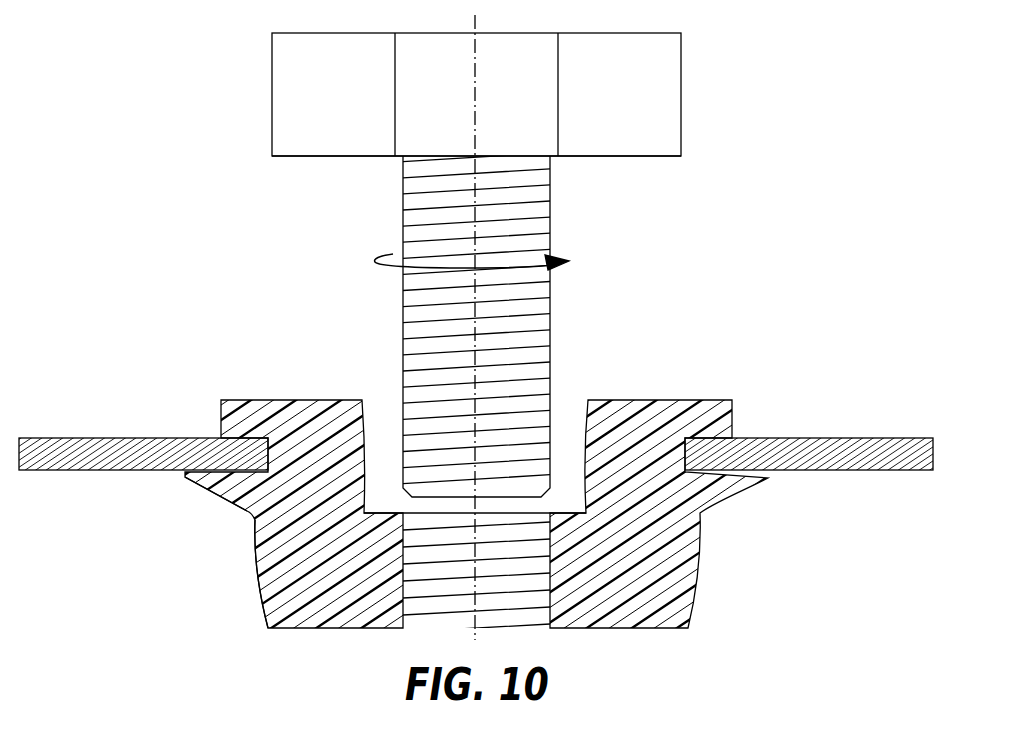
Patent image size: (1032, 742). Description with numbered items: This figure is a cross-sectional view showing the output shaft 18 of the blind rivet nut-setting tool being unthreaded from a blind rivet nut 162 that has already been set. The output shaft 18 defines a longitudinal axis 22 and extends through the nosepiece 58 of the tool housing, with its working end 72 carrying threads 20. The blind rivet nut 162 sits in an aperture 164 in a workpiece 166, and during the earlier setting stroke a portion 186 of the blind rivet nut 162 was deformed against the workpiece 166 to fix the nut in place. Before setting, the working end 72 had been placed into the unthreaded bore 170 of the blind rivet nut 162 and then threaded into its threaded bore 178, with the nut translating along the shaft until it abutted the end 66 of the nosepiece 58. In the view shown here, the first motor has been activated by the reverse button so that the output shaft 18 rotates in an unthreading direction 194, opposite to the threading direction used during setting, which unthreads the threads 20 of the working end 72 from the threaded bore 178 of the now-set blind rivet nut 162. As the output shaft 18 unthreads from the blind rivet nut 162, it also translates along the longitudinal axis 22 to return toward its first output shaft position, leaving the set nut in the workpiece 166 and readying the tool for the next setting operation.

The nosepiece 58 is at (292, 116).
The end of the nosepiece 66 is at (330, 157).
The longitudinal axis 22 is at (478, 102).
The output shaft 18 is at (590, 286).
The working end 72 is at (508, 193).
The threads 20 is at (590, 286).
The unthreading direction 194 is at (533, 273).
The aperture 164 is at (466, 492).
The workpiece 166 is at (100, 457).
The portion of the blind rivet nut 186 is at (213, 488).
The blind rivet nut 162 is at (285, 587).
The threaded bore 178 is at (427, 563).
The unthreaded bore 170 is at (568, 480).